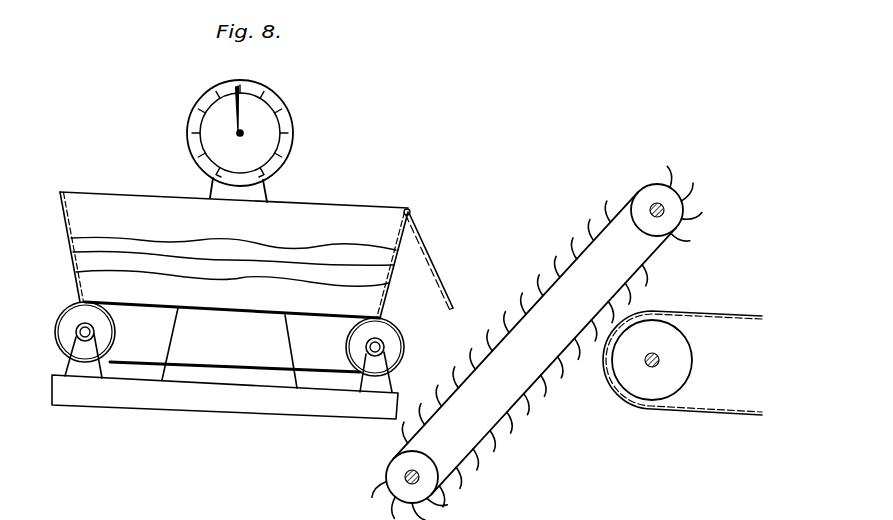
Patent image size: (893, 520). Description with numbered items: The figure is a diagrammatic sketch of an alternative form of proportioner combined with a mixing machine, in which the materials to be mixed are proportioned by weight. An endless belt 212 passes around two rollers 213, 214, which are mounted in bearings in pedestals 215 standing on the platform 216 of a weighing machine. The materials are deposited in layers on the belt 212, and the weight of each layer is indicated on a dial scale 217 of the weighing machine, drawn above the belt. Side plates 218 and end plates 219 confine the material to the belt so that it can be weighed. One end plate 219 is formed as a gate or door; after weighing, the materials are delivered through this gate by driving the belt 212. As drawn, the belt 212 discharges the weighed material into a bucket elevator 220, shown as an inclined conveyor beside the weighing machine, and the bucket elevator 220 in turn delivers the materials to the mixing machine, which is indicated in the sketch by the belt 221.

The endless belt 212 is at (324, 317).
The roller 213 is at (387, 347).
The roller 214 is at (102, 332).
The pedestal 215 is at (83, 367).
The platform 216 is at (228, 390).
The dial scale 217 is at (282, 100).
The side plate 218 is at (305, 218).
The end plate 219 is at (72, 252).
The bucket elevator 220 is at (588, 228).
The belt 221 is at (730, 322).